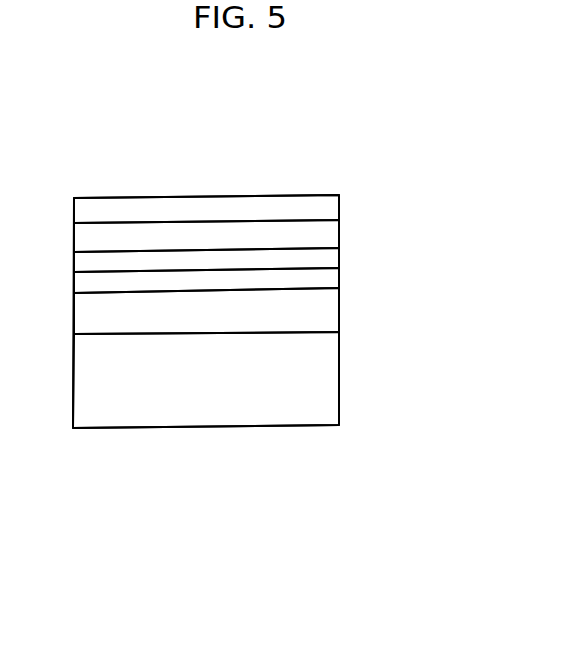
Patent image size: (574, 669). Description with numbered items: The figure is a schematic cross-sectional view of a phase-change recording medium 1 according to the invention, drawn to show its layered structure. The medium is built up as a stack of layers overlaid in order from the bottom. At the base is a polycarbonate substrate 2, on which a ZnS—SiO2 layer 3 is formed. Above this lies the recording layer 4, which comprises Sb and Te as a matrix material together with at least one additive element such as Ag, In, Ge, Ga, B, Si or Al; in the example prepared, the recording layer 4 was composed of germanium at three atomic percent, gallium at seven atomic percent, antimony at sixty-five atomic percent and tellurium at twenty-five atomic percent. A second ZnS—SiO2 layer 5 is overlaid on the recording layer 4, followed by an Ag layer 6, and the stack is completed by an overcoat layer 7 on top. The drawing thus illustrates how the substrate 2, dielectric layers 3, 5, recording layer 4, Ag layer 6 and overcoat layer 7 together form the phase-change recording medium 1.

The phase-change recording medium 1 is at (325, 177).
The polycarbonate substrate 2 is at (325, 378).
The ZnS—SiO2 layer 3 is at (331, 319).
The recording layer 4 is at (332, 278).
The ZnS—SiO2 layer 5 is at (332, 258).
The Ag layer 6 is at (330, 228).
The overcoat layer 7 is at (337, 201).